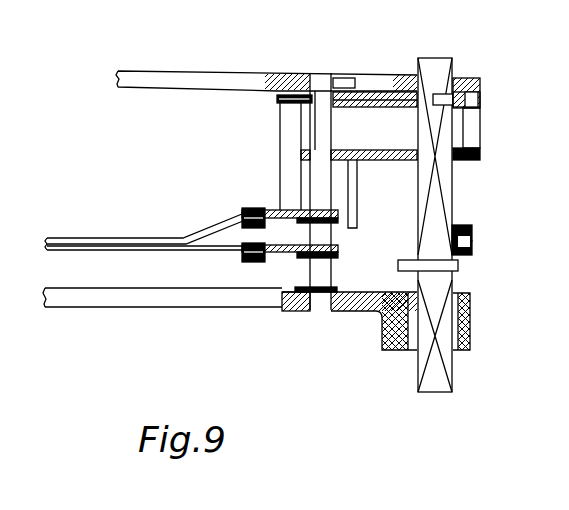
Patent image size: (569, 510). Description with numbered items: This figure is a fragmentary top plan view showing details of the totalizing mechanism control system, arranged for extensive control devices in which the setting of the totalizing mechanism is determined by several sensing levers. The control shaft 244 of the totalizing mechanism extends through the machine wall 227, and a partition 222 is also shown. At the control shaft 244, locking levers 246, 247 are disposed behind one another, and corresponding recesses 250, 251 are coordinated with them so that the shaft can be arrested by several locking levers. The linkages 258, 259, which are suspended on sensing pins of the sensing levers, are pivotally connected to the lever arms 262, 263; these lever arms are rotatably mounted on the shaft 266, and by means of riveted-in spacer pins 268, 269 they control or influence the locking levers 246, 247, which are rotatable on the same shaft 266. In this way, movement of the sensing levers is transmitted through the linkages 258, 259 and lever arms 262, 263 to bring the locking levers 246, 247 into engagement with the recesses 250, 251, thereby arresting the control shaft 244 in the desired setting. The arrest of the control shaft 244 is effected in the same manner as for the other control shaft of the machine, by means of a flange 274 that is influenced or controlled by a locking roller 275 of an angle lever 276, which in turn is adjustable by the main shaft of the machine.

The partition 222 is at (167, 84).
The locking lever 247 is at (364, 106).
The recess 251 is at (476, 108).
The spacer pin 269 is at (287, 125).
The lever arm 263 is at (270, 210).
The linkage 259 is at (208, 228).
The locking lever 246 is at (391, 160).
The recess 250 is at (456, 160).
The spacer pin 268 is at (353, 229).
The locking roller 275 is at (468, 227).
The angle lever 276 is at (470, 253).
The flange 274 is at (464, 272).
The machine wall 227 is at (112, 297).
The linkage 258 is at (202, 253).
The lever arm 262 is at (280, 256).
The shaft 266 is at (320, 305).
The control shaft 244 is at (425, 394).